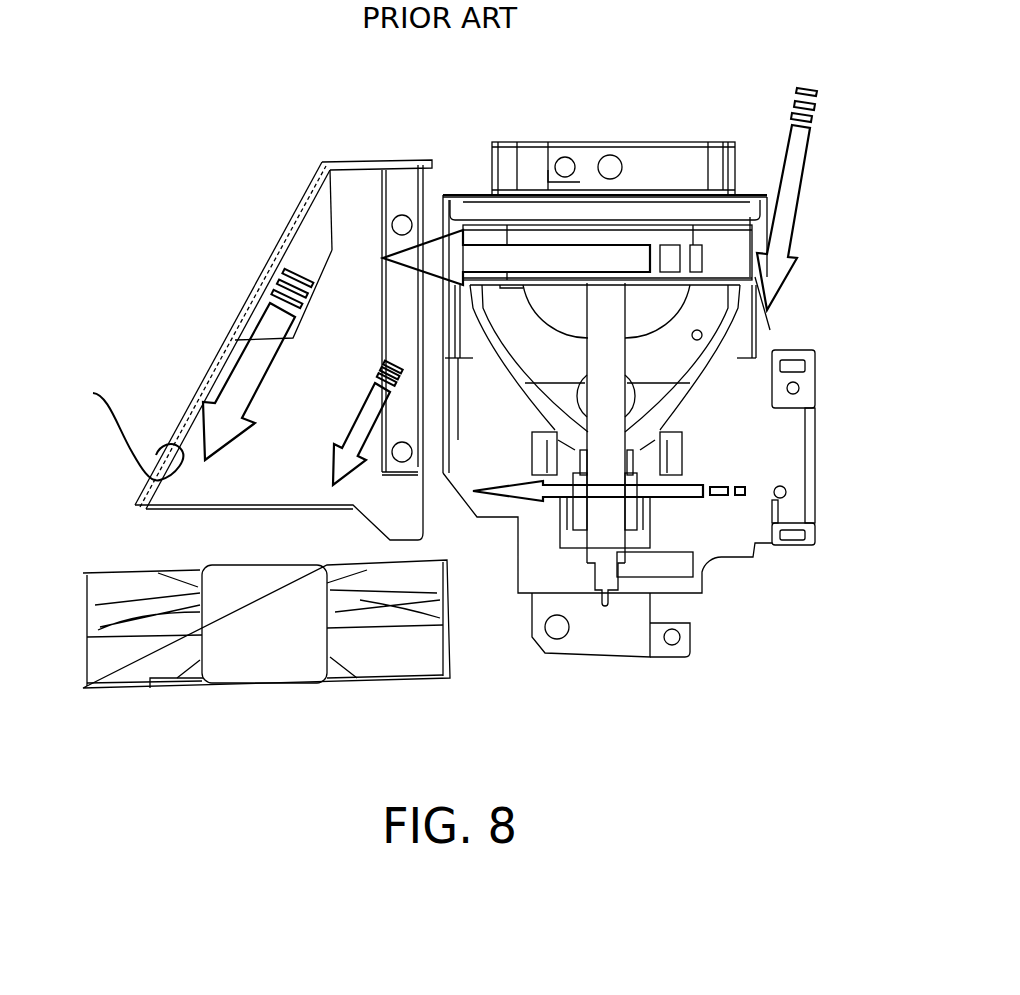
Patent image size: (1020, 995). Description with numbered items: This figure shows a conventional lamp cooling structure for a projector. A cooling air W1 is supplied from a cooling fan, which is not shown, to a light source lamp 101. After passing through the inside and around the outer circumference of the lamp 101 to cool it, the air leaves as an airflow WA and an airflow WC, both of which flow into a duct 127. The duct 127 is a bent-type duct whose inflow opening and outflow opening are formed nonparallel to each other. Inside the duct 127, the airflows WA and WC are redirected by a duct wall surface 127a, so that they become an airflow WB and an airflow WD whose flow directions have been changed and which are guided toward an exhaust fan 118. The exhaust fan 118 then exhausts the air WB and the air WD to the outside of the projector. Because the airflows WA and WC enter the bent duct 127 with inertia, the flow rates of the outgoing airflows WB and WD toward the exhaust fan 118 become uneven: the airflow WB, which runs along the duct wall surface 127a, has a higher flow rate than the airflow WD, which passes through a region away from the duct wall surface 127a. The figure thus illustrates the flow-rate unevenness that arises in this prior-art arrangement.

The light source lamp 101 is at (700, 392).
The exhaust fan 118 is at (315, 643).
The duct 127 is at (203, 377).
The duct wall surface 127a is at (103, 421).
The air (airflow) WA is at (612, 267).
The airflow WB is at (270, 338).
The air (airflow) WC is at (653, 498).
The airflow WD is at (358, 446).
The cooling air W1 is at (817, 199).